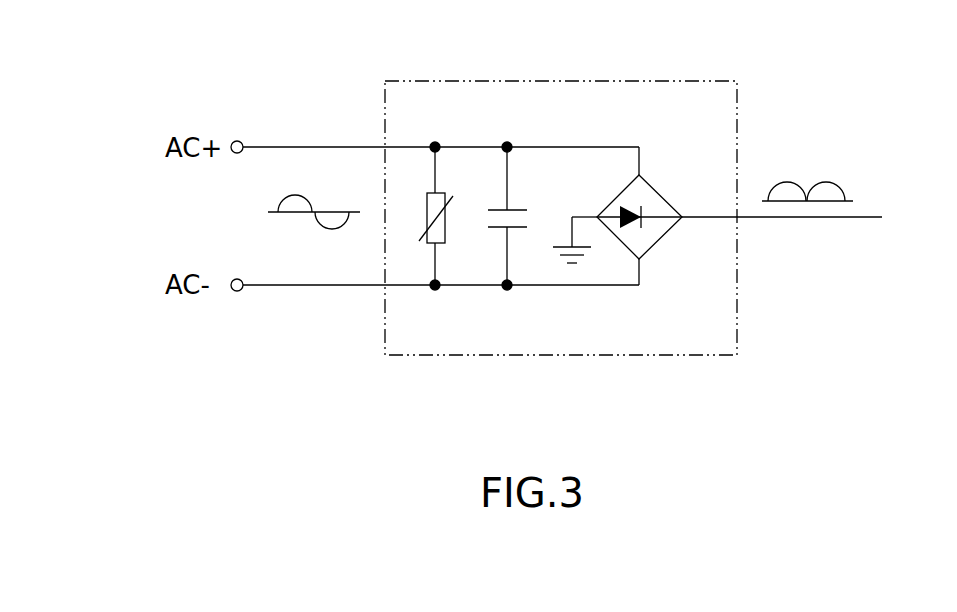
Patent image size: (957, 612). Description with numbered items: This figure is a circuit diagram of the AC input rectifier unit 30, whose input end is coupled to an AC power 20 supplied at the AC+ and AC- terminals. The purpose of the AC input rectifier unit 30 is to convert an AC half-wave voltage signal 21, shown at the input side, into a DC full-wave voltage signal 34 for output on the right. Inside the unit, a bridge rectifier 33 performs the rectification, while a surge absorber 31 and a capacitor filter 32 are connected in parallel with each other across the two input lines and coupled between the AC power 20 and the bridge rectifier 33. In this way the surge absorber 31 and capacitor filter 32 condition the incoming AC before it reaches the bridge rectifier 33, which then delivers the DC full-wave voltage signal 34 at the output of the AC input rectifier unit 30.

The AC power 20 is at (206, 115).
The AC half-wave voltage signal 21 is at (315, 212).
The AC input rectifier unit 30 is at (564, 80).
The surge absorber 31 is at (447, 193).
The capacitor filter 32 is at (517, 208).
The bridge rectifier 33 is at (660, 197).
The DC full-wave voltage signal 34 is at (807, 200).